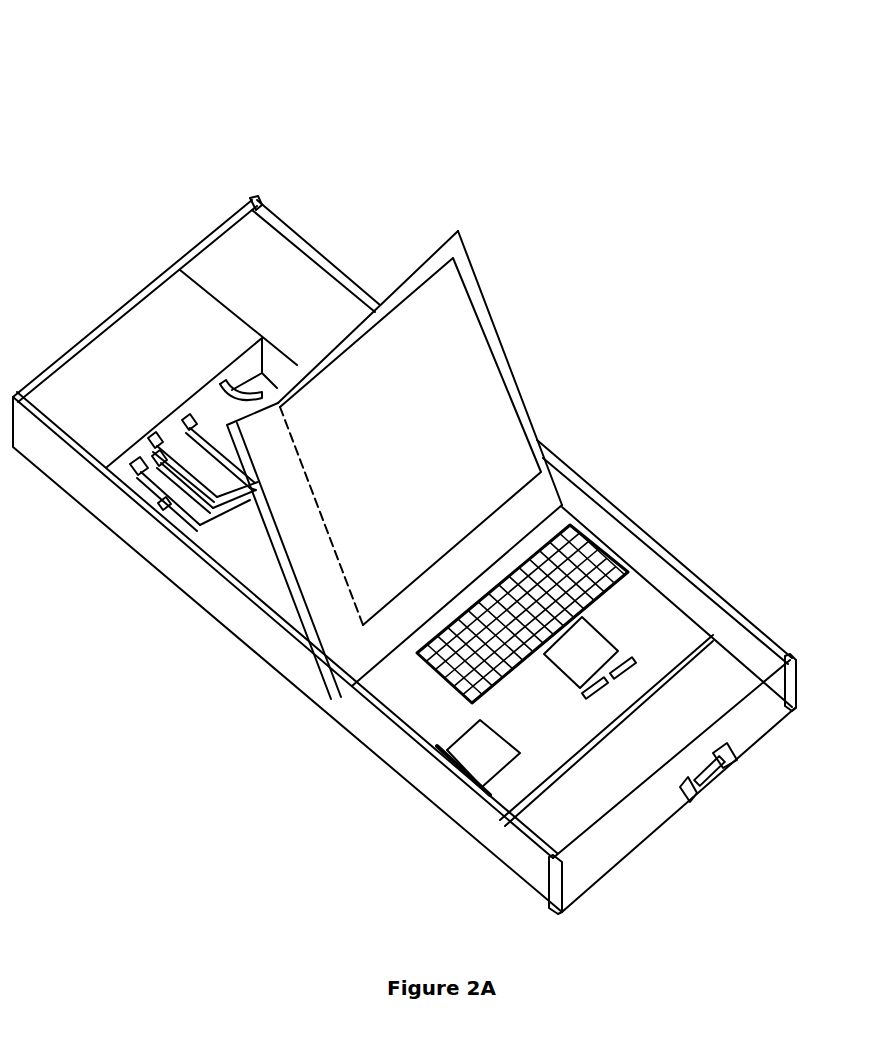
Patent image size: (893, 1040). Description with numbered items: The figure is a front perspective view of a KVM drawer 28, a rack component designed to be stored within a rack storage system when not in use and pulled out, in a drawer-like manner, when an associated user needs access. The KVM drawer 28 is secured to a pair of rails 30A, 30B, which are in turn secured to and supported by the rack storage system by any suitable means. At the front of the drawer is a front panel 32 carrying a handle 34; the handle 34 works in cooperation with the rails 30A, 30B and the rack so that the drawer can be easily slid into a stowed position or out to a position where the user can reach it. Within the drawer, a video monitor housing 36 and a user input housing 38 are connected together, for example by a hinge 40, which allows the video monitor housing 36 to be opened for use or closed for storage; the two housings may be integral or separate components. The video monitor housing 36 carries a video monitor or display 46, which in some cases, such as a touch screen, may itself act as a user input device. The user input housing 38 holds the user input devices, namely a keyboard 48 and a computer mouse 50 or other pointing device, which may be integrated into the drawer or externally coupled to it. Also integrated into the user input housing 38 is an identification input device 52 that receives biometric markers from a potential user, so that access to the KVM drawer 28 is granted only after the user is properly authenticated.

The KVM drawer 28 is at (527, 62).
The rail 30A is at (182, 567).
The rail 30B is at (633, 522).
The front panel 32 is at (644, 807).
The handle 34 is at (727, 775).
The video monitor housing 36 is at (503, 348).
The user input housing 38 is at (705, 603).
The hinge 40 is at (549, 503).
The video monitor 46 is at (442, 262).
The keyboard 48 is at (432, 665).
The computer mouse 50 is at (576, 672).
The identification input device 52 is at (443, 755).